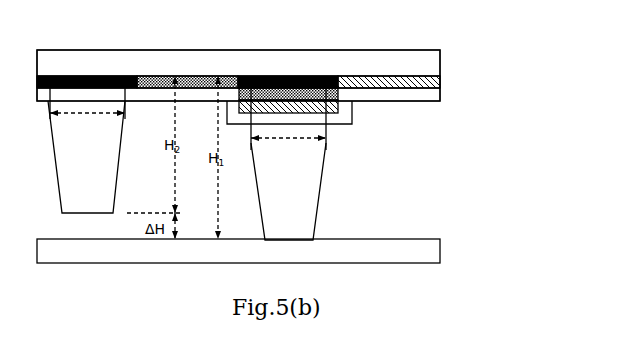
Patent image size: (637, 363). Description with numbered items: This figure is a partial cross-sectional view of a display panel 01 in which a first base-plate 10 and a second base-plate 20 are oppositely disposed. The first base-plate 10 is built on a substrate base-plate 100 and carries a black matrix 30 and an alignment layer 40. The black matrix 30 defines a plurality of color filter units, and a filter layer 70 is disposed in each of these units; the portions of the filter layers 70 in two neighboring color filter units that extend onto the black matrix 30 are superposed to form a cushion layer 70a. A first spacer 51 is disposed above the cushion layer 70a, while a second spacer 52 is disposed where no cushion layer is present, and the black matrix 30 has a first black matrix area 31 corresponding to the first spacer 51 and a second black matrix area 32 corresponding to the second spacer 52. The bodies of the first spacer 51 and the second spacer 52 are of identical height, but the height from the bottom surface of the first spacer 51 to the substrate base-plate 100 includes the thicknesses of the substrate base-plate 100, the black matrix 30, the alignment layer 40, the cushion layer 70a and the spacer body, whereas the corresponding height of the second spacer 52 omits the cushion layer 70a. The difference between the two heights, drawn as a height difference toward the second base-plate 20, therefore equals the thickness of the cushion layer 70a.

The display panel 01 is at (59, 32).
The first base-plate 10 is at (479, 50).
The substrate base-plate 100 is at (428, 62).
The alignment layer 40 is at (428, 94).
The black matrix 30 is at (307, 76).
The filter layer 70 is at (393, 86).
The cushion layer 70a is at (341, 101).
The second spacer 52 is at (100, 157).
The first spacer 51 is at (313, 188).
The second base-plate 20 is at (428, 251).
The second black matrix area 32 is at (87, 104).
The first black matrix area 31 is at (288, 119).